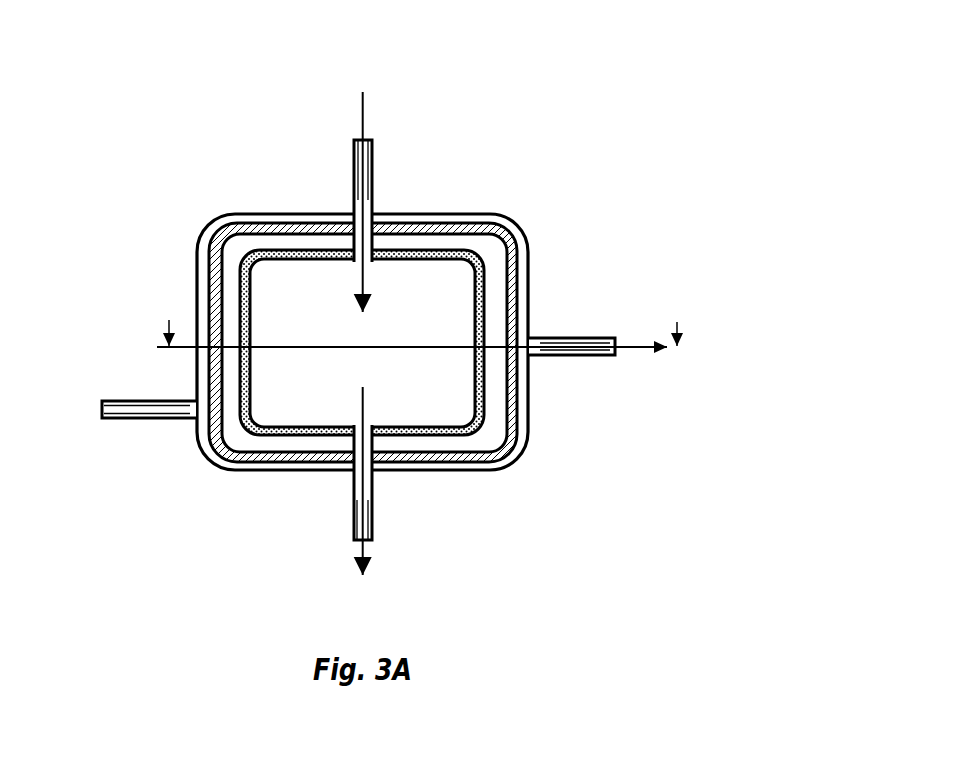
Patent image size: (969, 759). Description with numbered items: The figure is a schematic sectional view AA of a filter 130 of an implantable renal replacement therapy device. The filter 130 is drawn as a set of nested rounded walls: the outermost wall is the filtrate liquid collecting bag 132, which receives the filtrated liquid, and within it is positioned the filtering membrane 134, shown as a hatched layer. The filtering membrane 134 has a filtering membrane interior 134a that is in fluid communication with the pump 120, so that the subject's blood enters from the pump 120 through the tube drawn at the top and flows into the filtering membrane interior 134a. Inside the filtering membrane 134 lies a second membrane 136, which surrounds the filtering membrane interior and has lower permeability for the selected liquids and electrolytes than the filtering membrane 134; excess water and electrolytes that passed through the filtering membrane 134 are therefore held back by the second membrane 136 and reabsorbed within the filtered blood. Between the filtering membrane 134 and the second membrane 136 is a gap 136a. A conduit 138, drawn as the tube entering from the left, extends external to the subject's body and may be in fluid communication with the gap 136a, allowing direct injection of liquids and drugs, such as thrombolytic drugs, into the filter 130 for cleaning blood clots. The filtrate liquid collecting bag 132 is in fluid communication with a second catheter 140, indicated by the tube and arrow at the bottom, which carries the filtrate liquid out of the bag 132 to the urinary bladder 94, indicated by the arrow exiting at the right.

The filter 130 is at (71, 49).
The filtrate liquid collecting bag 132 is at (205, 222).
The filtering membrane 134 is at (512, 233).
The filtering membrane interior 134a is at (392, 292).
The second membrane 136 is at (515, 305).
The gap 136a is at (498, 415).
The conduit 138 is at (120, 398).
The pump 120 is at (308, 196).
The urinary bladder 94 is at (458, 358).
The second catheter 140 is at (399, 500).